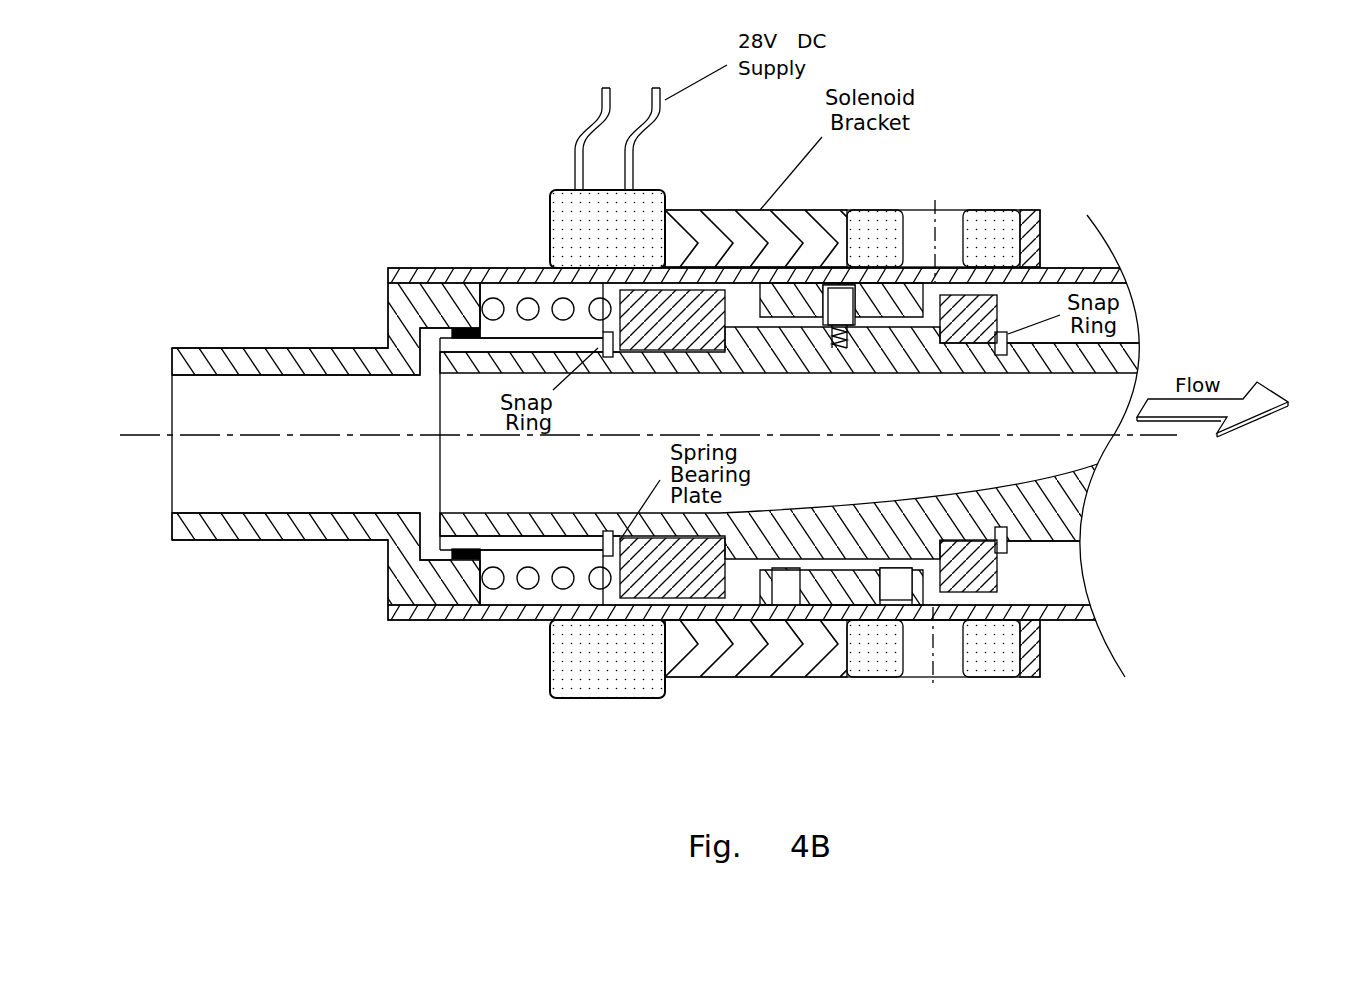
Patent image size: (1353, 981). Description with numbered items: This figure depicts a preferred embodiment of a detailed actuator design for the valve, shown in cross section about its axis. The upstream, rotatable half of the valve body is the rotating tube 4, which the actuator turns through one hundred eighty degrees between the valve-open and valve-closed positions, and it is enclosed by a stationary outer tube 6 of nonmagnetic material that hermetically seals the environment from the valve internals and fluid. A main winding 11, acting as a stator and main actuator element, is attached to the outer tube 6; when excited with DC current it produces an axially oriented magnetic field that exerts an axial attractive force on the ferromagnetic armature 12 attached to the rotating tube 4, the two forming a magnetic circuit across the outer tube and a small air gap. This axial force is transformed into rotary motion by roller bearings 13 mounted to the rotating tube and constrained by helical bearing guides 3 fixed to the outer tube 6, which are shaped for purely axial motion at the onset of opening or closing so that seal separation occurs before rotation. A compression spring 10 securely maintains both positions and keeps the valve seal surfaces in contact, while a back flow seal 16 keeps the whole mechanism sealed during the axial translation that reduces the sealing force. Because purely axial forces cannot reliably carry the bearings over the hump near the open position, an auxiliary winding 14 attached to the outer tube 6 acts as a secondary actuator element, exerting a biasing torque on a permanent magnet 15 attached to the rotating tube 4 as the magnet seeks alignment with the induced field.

The bearing guide 3 is at (893, 585).
The rotating tube 4 is at (440, 410).
The outer tube 6 is at (1058, 267).
The compression spring 10 is at (498, 592).
The main winding 11 is at (555, 192).
The armature 12 is at (677, 320).
The roller bearing 13 is at (838, 303).
The auxiliary winding 14 is at (990, 210).
The permanent magnet 15 is at (1000, 572).
The back flow seal 16 is at (465, 547).